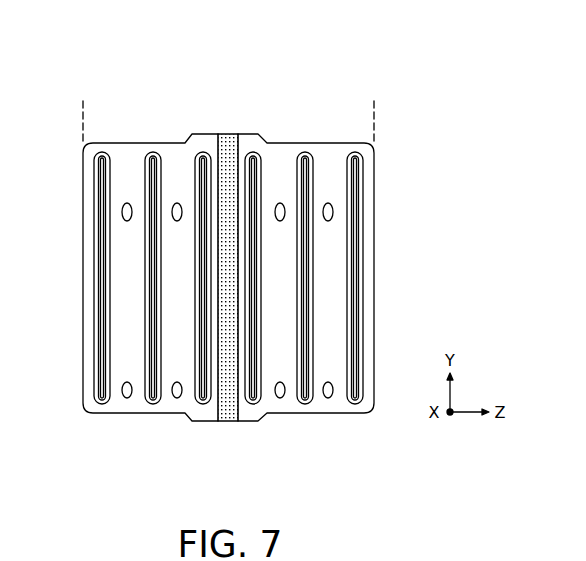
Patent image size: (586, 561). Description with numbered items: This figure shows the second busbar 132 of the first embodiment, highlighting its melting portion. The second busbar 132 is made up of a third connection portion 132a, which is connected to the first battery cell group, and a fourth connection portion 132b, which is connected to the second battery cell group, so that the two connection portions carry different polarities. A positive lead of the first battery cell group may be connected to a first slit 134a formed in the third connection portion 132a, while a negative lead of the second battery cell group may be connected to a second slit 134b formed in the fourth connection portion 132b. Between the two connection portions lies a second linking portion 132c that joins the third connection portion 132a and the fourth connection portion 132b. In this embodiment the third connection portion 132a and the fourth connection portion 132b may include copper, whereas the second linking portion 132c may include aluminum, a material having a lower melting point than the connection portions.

The second busbar 132 is at (103, 78).
The third connection portion 132a is at (374, 101).
The fourth connection portion 132b is at (215, 101).
The second linking portion 132c is at (238, 134).
The first slit 134a is at (253, 405).
The second slit 134b is at (203, 405).